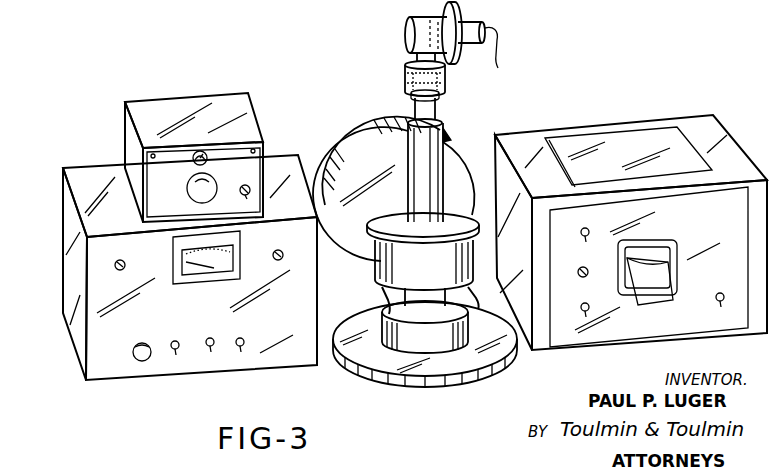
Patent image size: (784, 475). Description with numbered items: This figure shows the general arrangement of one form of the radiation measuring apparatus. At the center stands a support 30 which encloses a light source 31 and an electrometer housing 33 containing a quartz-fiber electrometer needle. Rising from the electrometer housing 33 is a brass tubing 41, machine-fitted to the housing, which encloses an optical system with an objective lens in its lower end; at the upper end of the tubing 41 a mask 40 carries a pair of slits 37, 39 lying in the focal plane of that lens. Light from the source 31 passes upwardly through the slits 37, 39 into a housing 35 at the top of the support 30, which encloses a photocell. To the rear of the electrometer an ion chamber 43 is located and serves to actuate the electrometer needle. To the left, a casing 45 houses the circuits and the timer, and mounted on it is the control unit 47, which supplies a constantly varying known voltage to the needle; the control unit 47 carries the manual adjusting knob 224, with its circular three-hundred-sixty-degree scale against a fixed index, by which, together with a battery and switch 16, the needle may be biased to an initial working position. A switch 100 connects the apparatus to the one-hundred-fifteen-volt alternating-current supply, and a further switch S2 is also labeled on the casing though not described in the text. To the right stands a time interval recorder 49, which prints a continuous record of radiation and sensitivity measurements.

The switch 16 is at (243, 186).
The manual adjusting knob 224 is at (197, 193).
The support 30 is at (410, 385).
The light source 31 is at (415, 342).
The electrometer housing 33 is at (402, 280).
The housing 35 is at (409, 33).
The slit 37 is at (406, 80).
The slit 39 is at (441, 78).
The mask 40 is at (440, 94).
The brass tubing 41 is at (430, 153).
The ion chamber 43 is at (353, 134).
The casing 45 is at (78, 291).
The control unit 47 is at (146, 103).
The time interval recorder 49 is at (697, 127).
The switch 100 is at (176, 352).
The switch S2 is at (211, 348).